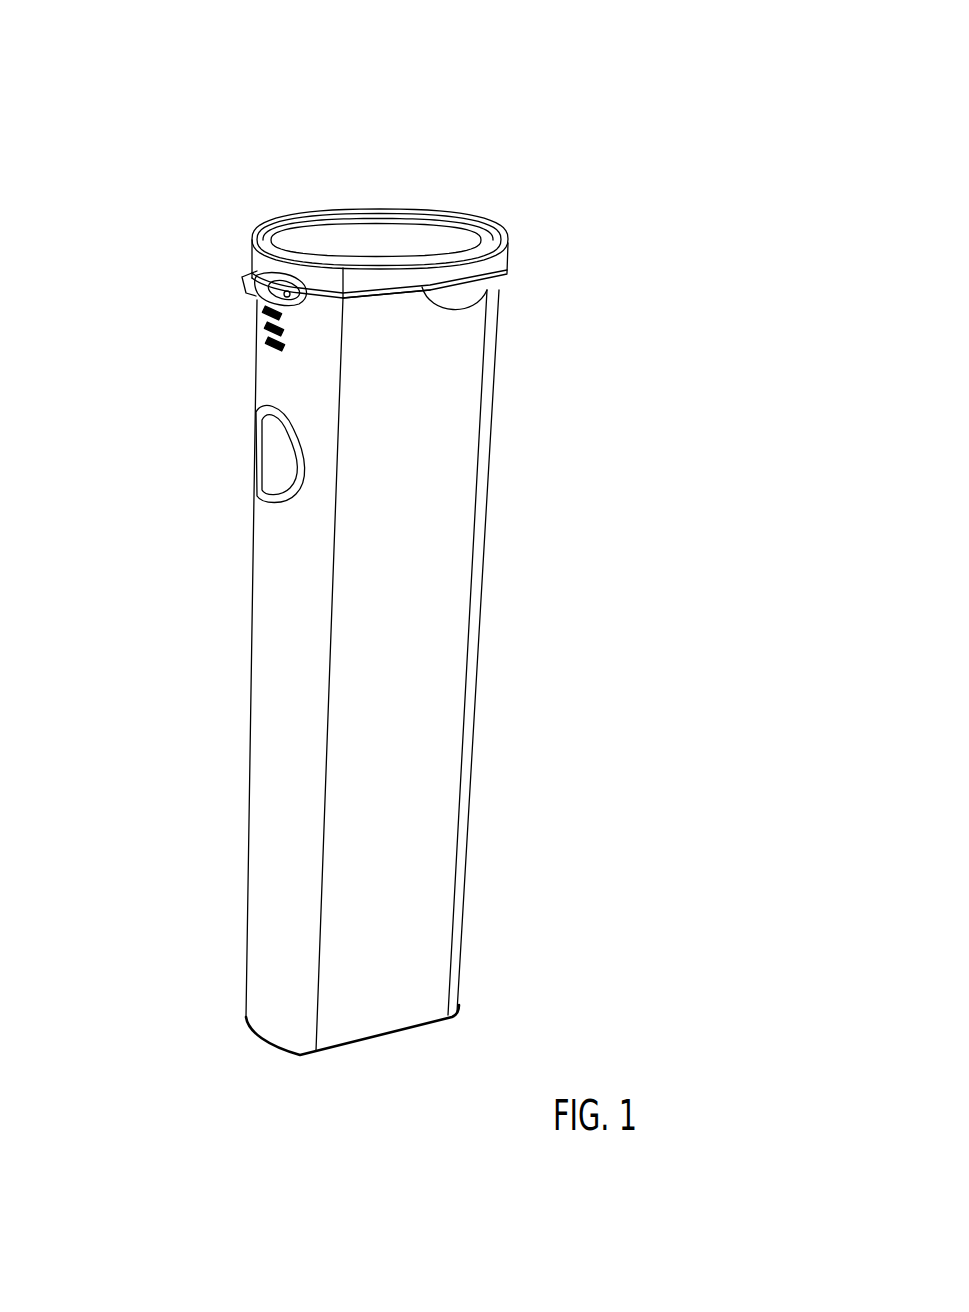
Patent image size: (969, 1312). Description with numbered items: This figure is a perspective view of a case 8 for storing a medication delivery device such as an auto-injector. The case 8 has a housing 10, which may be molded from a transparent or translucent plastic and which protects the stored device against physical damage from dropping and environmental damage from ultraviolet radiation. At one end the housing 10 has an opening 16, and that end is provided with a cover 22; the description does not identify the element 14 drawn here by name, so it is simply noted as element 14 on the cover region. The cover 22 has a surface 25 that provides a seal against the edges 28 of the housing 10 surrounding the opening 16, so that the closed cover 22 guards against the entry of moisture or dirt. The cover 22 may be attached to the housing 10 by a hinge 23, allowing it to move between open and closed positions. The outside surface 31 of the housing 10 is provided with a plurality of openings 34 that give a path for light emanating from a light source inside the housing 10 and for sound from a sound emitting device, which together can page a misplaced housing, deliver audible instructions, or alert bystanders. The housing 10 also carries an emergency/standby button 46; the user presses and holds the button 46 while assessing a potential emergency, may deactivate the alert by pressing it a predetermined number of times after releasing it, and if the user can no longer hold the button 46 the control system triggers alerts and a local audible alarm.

The case 8 is at (609, 163).
The housing 10 is at (372, 745).
The cap 14 is at (328, 188).
The opening 16 is at (383, 290).
The cover 22 is at (370, 243).
The hinge 23 is at (246, 268).
The surface 25 is at (478, 283).
The edges 28 is at (482, 287).
The outside surface 31 is at (300, 608).
The openings 34 is at (262, 318).
The emergency/standby button 46 is at (278, 462).